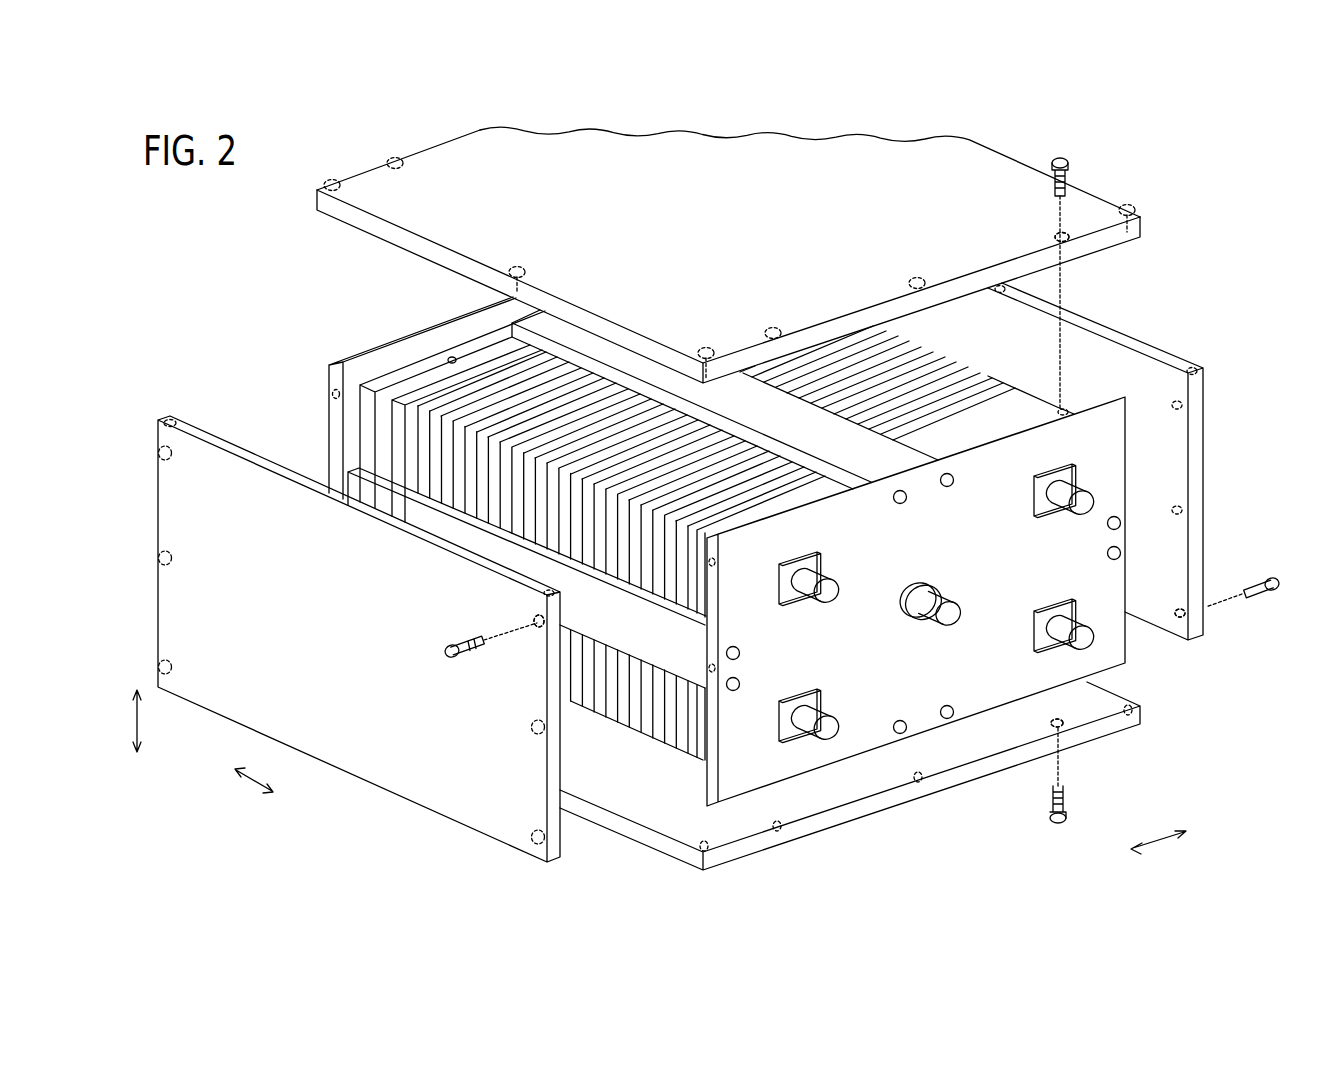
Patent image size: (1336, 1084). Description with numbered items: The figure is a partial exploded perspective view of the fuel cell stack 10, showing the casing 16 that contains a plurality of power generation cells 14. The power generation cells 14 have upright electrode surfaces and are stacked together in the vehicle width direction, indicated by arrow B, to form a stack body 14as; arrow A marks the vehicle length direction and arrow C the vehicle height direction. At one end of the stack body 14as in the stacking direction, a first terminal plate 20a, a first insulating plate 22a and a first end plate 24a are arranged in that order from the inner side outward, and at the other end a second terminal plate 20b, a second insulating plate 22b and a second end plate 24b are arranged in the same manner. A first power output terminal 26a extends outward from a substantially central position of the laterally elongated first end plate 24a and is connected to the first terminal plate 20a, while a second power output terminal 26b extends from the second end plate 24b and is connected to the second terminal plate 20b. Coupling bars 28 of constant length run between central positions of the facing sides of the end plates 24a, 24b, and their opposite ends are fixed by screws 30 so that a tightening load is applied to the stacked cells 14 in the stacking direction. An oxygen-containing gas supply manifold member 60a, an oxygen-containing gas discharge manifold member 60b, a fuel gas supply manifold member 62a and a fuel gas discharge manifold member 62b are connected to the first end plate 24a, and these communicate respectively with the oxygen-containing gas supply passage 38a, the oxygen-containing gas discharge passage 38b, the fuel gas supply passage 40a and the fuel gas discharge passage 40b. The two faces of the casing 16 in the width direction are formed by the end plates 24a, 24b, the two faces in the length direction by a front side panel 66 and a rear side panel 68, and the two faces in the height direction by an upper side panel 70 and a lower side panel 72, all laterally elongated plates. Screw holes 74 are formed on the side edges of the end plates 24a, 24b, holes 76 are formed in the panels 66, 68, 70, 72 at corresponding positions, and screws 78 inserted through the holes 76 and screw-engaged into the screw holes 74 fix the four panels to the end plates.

The fuel cell stack 10 is at (254, 204).
The power generation cell 14 is at (503, 522).
The stack body 14as is at (448, 607).
The casing 16 is at (338, 165).
The first terminal plate 20a is at (688, 748).
The second terminal plate 20b is at (386, 395).
The first insulating plate 22a is at (698, 762).
The second insulating plate 22b is at (372, 390).
The first end plate 24a is at (1132, 418).
The second end plate 24b is at (324, 373).
The first power output terminal 26a is at (952, 616).
The second power output terminal 26b is at (452, 358).
The coupling bar 28 is at (518, 324).
The screw 30 is at (900, 503).
The oxygen-containing gas supply passage 38a is at (1090, 500).
The oxygen-containing gas discharge passage 38b is at (827, 738).
The fuel gas supply passage 40a is at (828, 597).
The fuel gas discharge passage 40b is at (1080, 648).
The oxygen-containing gas supply manifold member 60a is at (1175, 490).
The oxygen-containing gas discharge manifold member 60b is at (823, 780).
The fuel gas supply manifold member 62a is at (882, 712).
The fuel gas discharge manifold member 62b is at (1101, 693).
The front side panel 66 is at (473, 828).
The rear side panel 68 is at (1170, 367).
The upper side panel 70 is at (1028, 173).
The lower side panel 72 is at (1143, 714).
The screw hole 74 is at (714, 567).
The hole 76 is at (1068, 232).
The screw 78 is at (1070, 162).